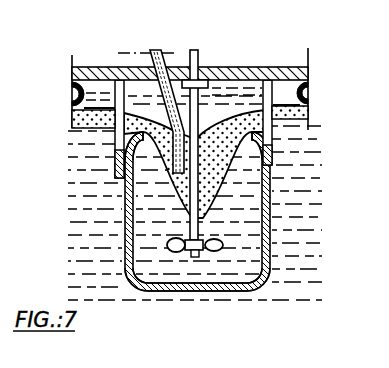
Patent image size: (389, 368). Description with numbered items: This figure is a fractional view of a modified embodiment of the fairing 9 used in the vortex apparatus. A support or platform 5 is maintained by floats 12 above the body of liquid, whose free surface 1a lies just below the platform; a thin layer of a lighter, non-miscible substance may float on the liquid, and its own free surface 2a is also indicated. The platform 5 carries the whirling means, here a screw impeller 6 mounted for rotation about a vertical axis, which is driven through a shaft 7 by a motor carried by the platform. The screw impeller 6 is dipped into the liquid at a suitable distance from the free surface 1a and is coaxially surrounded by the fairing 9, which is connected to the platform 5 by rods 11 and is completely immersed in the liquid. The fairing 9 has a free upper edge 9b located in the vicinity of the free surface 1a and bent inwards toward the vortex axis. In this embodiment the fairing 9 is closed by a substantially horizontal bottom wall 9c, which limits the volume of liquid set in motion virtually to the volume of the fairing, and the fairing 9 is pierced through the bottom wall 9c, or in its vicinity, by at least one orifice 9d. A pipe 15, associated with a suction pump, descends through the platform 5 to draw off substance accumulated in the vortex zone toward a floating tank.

The free surface 1a is at (306, 118).
The free surface of the thin layer 2a is at (266, 86).
The support or platform 5 is at (112, 74).
The screw impeller 6 is at (177, 252).
The shaft 7 is at (200, 62).
The fairing 9 is at (269, 207).
The free upper edge 9b is at (263, 152).
The bottom wall 9c is at (227, 290).
The orifice 9d is at (262, 282).
The rods 11 is at (116, 145).
The floats 12 is at (311, 88).
The pipe 15 is at (156, 52).